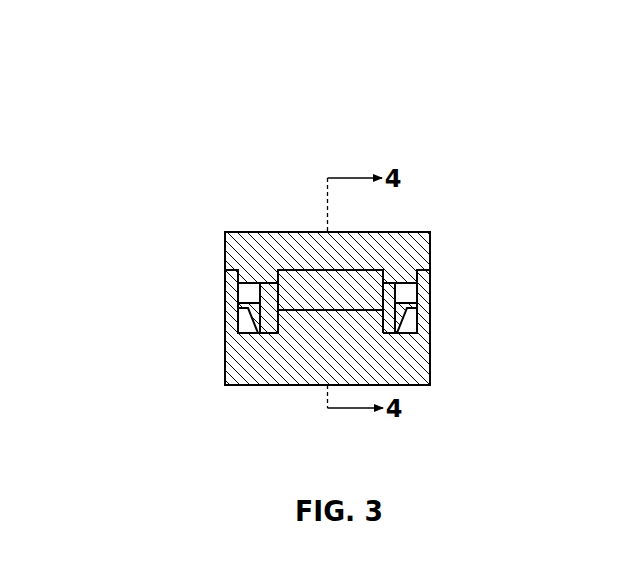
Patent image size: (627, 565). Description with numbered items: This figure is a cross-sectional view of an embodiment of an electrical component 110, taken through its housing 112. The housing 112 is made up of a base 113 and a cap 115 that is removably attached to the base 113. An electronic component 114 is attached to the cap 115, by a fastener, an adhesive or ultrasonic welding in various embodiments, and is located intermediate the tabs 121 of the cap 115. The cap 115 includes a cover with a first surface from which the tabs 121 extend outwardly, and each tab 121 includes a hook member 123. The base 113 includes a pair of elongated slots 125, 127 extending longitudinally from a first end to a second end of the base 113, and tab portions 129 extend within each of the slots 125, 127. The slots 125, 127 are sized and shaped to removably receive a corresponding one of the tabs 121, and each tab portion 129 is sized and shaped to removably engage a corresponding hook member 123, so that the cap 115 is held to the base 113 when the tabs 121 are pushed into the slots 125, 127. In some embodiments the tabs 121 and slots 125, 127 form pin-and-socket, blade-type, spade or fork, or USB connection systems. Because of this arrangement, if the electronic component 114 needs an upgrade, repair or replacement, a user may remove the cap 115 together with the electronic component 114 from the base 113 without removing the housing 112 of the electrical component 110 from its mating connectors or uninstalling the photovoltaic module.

The electrical component 110 is at (231, 174).
The housing 112 is at (432, 234).
The base 113 is at (405, 384).
The electronic component 114 is at (316, 296).
The cap 115 is at (375, 232).
The tab 121 is at (262, 300).
The hook member 123 is at (270, 317).
The elongated slot 125 is at (250, 288).
The elongated slot 127 is at (407, 322).
The tab portion 129 is at (417, 293).